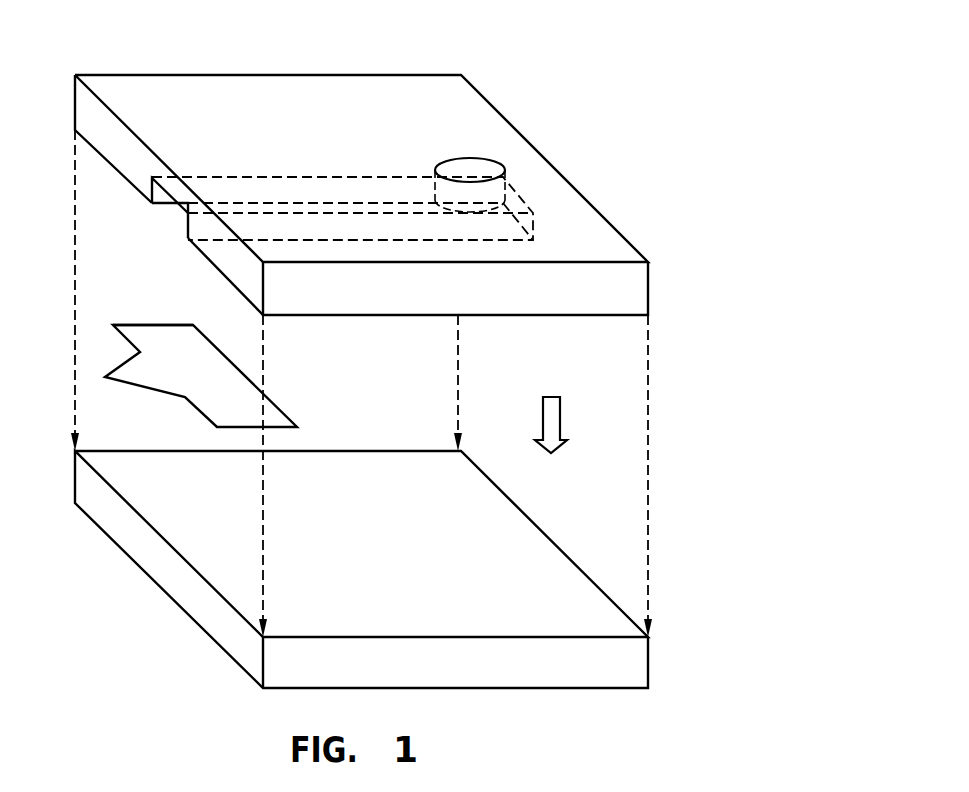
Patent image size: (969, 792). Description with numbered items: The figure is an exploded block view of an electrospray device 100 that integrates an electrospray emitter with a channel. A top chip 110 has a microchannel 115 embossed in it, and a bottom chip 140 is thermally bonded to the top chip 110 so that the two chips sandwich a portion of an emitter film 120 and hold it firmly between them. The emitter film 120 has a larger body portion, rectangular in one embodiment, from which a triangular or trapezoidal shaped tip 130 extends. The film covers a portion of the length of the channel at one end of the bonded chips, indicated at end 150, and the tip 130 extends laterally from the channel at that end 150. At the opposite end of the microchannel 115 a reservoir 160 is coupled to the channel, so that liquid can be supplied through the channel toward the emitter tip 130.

The electrospray device 100 is at (630, 130).
The top chip 110 is at (267, 75).
The microchannel 115 is at (175, 210).
The emitter film 120 is at (148, 323).
The tip 130 is at (145, 387).
The bottom chip 140 is at (650, 663).
The end 150 is at (117, 153).
The reservoir 160 is at (478, 163).